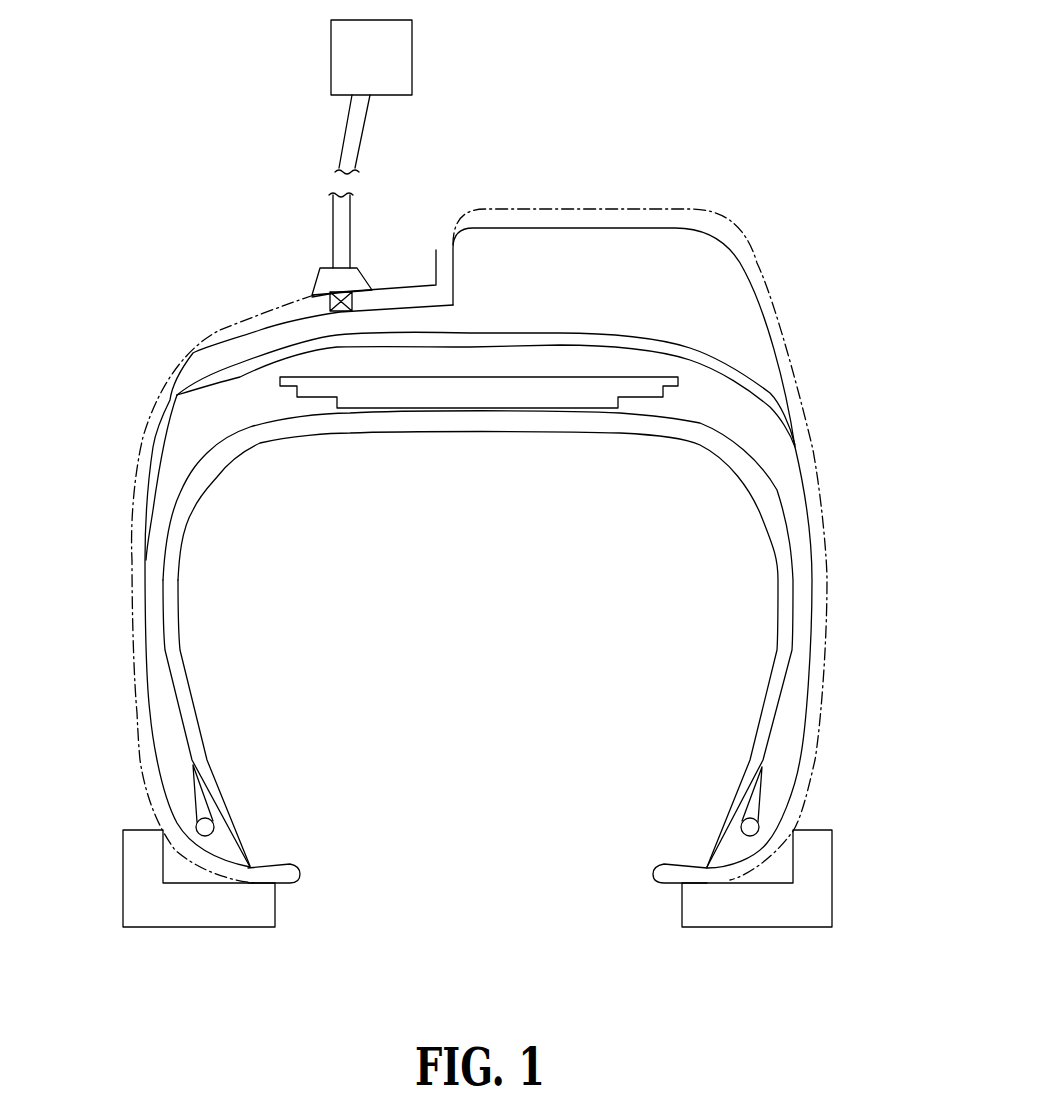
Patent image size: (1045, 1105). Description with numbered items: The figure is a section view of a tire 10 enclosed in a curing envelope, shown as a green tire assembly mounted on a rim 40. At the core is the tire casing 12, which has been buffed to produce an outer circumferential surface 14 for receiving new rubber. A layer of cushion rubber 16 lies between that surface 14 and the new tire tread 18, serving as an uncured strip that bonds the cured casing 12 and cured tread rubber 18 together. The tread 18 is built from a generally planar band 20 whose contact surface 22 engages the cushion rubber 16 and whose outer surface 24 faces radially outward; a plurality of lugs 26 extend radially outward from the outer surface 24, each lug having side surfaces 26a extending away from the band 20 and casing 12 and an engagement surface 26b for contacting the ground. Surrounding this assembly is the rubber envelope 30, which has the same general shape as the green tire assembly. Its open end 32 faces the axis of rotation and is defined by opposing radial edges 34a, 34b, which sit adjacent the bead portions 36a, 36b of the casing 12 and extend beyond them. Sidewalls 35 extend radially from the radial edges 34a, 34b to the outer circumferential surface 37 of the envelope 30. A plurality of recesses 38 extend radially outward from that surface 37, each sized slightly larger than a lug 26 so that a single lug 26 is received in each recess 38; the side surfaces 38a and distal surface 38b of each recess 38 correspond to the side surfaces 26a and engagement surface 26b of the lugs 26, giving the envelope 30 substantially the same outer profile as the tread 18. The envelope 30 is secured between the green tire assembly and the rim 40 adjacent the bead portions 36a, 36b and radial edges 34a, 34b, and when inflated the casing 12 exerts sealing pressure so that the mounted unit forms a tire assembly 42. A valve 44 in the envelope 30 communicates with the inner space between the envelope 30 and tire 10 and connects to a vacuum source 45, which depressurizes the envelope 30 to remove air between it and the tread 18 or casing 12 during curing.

The tire 10 is at (797, 440).
The tire casing 12 is at (793, 487).
The outer circumferential surface 14 is at (747, 370).
The cushion rubber 16 is at (173, 398).
The tire tread 18 is at (730, 280).
The band 20 is at (297, 318).
The contact surface 22 is at (243, 367).
The outer surface 24 is at (393, 300).
The lugs 26 is at (610, 250).
The side surfaces 26a is at (440, 247).
The engagement surface 26b is at (585, 212).
The rubber envelope 30 is at (840, 626).
The open end 32 is at (371, 879).
The radial edge 34a is at (298, 862).
The radial edge 34b is at (660, 862).
The sidewalls 35 is at (133, 598).
The bead portion 36a is at (222, 805).
The bead portion 36b is at (735, 820).
The outer circumferential surface 37 is at (300, 296).
The recesses 38 is at (733, 230).
The side surfaces 38a is at (434, 248).
The distal surface 38b is at (578, 212).
The rim 40 is at (140, 895).
The tire assembly 42 is at (814, 86).
The valve 44 is at (365, 267).
The vacuum source 45 is at (362, 30).